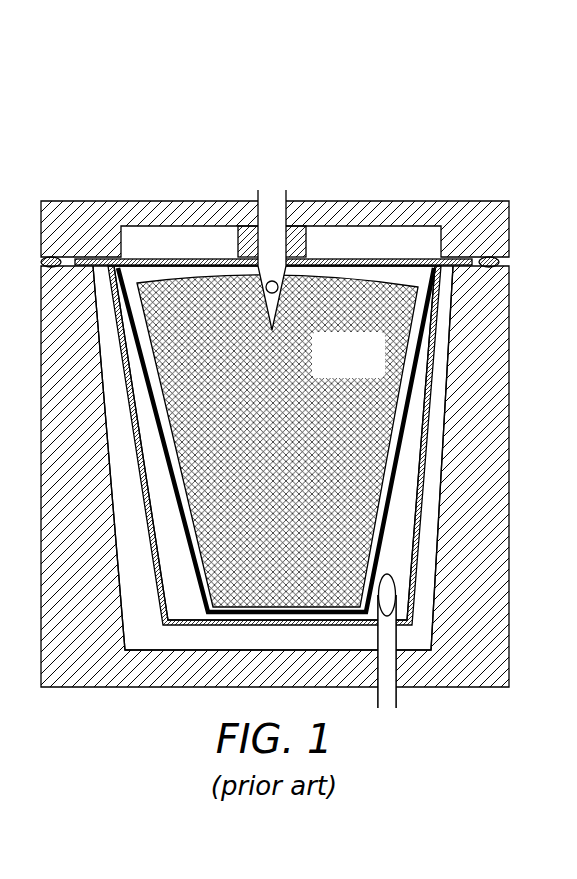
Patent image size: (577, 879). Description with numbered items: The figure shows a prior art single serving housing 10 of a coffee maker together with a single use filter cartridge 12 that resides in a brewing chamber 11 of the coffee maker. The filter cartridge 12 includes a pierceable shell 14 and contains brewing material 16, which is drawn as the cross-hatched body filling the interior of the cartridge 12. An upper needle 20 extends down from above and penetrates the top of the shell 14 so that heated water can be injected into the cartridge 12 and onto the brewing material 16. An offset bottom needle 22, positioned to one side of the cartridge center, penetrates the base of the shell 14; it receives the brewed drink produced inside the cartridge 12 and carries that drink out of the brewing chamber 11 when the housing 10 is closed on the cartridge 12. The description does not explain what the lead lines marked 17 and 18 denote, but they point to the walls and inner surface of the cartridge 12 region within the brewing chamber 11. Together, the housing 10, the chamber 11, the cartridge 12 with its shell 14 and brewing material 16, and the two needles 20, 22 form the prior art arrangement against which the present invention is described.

The single serving housing 10 is at (475, 203).
The brewing chamber 11 is at (430, 550).
The single use filter cartridge 12 is at (352, 288).
The pierceable shell 14 is at (333, 262).
The brewing material 16 is at (331, 363).
The crucible inner surface 17 is at (413, 585).
The liner 18 is at (395, 455).
The upper needle 20 is at (273, 198).
The offset bottom needle 22 is at (390, 700).